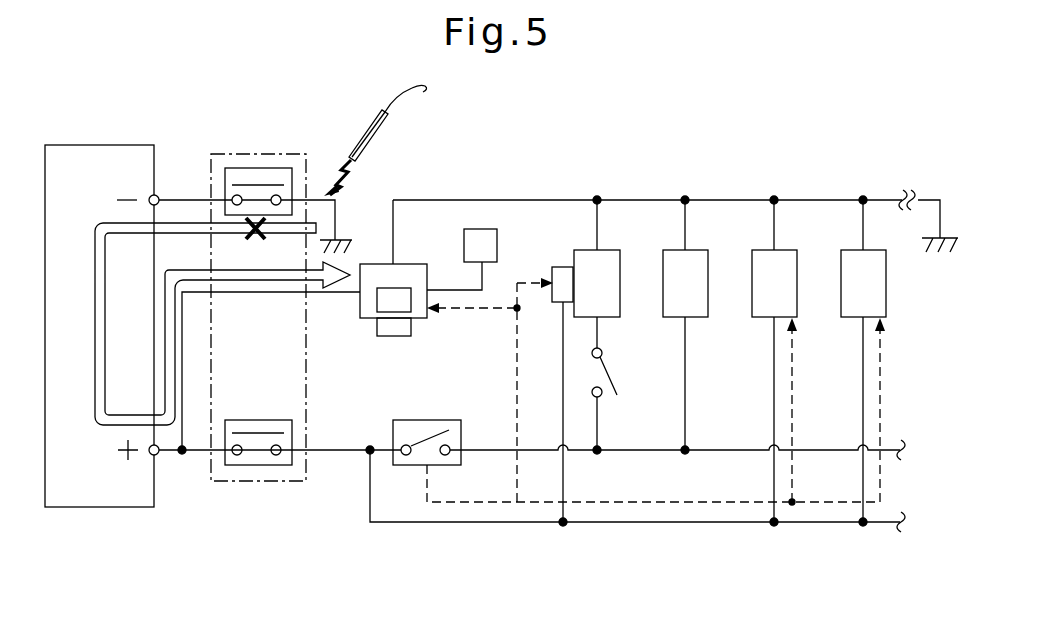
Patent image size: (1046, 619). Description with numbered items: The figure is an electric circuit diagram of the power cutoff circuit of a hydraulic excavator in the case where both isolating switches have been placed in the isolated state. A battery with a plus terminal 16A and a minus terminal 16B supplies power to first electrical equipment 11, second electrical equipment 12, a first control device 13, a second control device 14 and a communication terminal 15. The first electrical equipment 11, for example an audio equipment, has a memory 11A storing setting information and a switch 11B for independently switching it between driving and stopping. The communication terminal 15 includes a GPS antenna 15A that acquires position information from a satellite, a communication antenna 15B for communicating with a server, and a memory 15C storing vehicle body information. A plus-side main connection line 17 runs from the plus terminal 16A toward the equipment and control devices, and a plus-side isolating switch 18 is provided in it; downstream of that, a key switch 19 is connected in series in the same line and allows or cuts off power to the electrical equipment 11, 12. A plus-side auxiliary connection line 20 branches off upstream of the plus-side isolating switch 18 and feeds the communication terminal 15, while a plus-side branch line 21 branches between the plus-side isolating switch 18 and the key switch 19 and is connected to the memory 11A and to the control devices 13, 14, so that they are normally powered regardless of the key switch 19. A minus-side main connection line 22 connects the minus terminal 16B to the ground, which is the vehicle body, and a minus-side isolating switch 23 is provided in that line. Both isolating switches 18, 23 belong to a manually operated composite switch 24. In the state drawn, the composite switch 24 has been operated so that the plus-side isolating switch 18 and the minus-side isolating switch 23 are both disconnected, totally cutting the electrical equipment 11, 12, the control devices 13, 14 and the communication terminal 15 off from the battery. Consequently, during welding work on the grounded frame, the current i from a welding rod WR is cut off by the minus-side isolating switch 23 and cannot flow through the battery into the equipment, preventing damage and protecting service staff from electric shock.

The first electrical equipment 11 is at (610, 250).
The memory 11A is at (555, 267).
The switch 11B is at (608, 378).
The second electrical equipment 12 is at (697, 250).
The first control device 13 is at (785, 250).
The second control device 14 is at (886, 285).
The communication terminal 15 is at (383, 264).
The GPS antenna 15A is at (483, 229).
The communication antenna 15B is at (385, 300).
The memory 15C is at (405, 327).
The plus terminal 16A is at (158, 454).
The minus terminal 16B is at (157, 196).
The plus-side main connection line 17 is at (330, 453).
The plus-side isolating switch 18 is at (258, 420).
The key switch 19 is at (427, 420).
The plus-side auxiliary connection line 20 is at (258, 292).
The plus-side branch line 21 is at (505, 523).
The minus-side main connection line 22 is at (324, 196).
The minus-side isolating switch 23 is at (258, 168).
The composite switch 24 is at (235, 154).
The welding rod WR is at (366, 122).
The current i is at (97, 250).